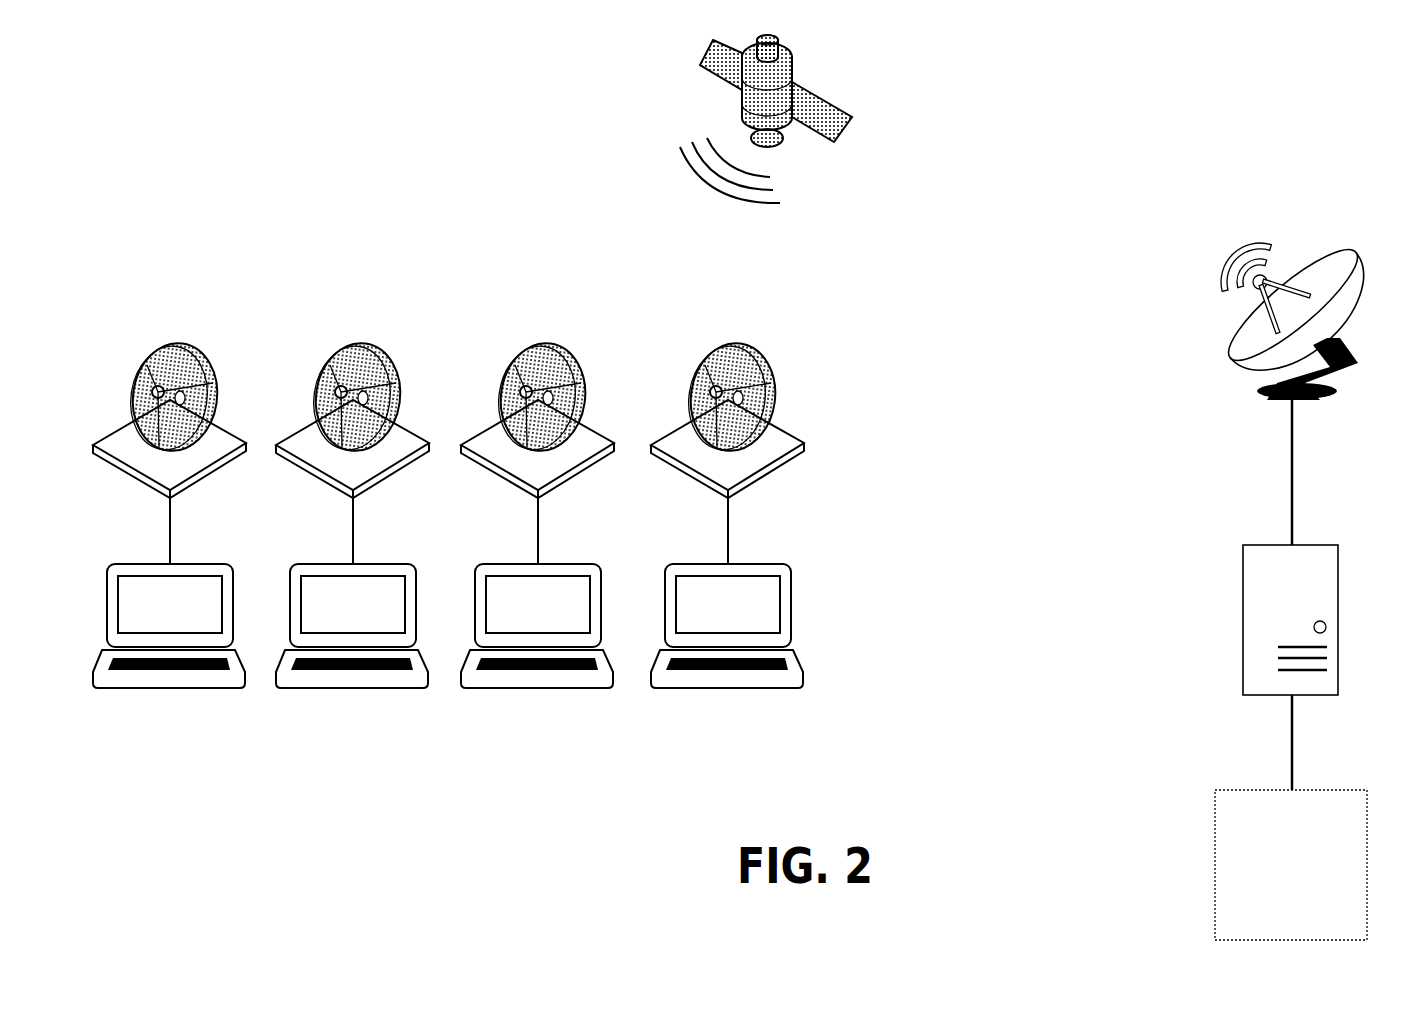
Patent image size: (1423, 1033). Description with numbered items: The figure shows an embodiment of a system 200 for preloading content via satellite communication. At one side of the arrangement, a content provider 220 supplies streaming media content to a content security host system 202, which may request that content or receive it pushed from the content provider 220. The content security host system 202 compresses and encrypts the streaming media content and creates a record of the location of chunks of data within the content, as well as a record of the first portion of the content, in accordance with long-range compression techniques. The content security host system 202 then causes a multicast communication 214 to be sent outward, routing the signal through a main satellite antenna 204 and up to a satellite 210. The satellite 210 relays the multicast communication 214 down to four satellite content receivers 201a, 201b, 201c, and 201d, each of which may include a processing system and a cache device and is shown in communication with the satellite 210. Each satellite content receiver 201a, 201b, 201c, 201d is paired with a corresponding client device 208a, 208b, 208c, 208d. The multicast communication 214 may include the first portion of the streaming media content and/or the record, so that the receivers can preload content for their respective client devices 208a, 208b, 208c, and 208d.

The system 200 is at (1358, 107).
The satellite content receiver 201a is at (181, 343).
The satellite content receiver 201b is at (364, 343).
The satellite content receiver 201c is at (549, 343).
The satellite content receiver 201d is at (739, 343).
The content security host system 202 is at (1243, 602).
The main satellite antenna 204 is at (1232, 357).
The client device 208a is at (163, 688).
The client device 208b is at (346, 688).
The client device 208c is at (531, 688).
The client device 208d is at (721, 688).
The satellite 210 is at (850, 118).
The multicast communication 214 is at (783, 203).
The content provider 220 is at (1274, 900).